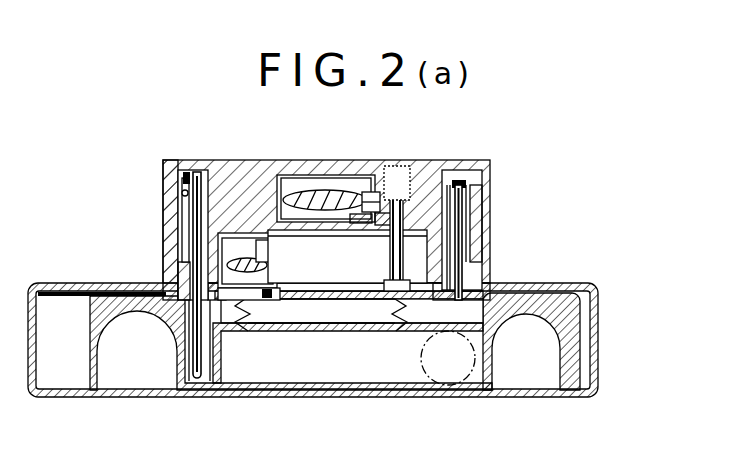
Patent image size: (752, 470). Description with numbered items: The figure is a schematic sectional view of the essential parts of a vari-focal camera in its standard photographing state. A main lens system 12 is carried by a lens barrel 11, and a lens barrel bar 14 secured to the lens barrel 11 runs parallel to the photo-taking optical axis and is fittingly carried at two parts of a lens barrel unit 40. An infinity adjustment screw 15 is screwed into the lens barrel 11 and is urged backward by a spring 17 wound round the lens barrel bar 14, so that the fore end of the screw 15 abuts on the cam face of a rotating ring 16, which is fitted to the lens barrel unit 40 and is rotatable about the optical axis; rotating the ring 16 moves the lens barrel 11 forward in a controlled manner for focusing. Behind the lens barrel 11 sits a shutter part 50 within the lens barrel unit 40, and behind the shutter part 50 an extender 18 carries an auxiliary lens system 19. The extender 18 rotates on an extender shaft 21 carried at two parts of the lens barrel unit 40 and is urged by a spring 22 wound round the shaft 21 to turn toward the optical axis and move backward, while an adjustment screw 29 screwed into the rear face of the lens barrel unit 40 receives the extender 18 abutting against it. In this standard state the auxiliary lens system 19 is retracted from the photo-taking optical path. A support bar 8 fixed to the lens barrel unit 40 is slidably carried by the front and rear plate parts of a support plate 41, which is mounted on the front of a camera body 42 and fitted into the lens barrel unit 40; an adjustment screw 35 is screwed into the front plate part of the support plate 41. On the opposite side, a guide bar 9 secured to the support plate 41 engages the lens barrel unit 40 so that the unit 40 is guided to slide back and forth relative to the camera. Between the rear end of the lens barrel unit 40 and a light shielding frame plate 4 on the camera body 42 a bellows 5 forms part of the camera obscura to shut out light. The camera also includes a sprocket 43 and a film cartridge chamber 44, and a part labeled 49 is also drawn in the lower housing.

The light shielding frame plate 4 is at (236, 318).
The bellows 5 is at (399, 302).
The support bar 8 is at (183, 193).
The guide bar 9 is at (458, 238).
The lens barrel 11 is at (316, 182).
The main lens system 12 is at (343, 190).
The lens barrel bar 14 is at (386, 281).
The infinity adjustment screw 15 is at (372, 190).
The rotating ring 16 is at (383, 228).
The spring 17 is at (401, 168).
The extender 18 is at (265, 250).
The auxiliary lens system 19 is at (238, 260).
The extender shaft 21 is at (287, 292).
The spring 22 is at (347, 256).
The adjustment screw 29 is at (268, 298).
The adjustment screw 35 is at (182, 160).
The lens barrel unit 40 is at (163, 228).
The support plate 41 is at (168, 260).
The camera body 42 is at (576, 326).
The sprocket 43 is at (463, 389).
The film cartridge chamber 44 is at (150, 398).
The top cover plate 49 is at (58, 283).
The shutter part 50 is at (293, 190).